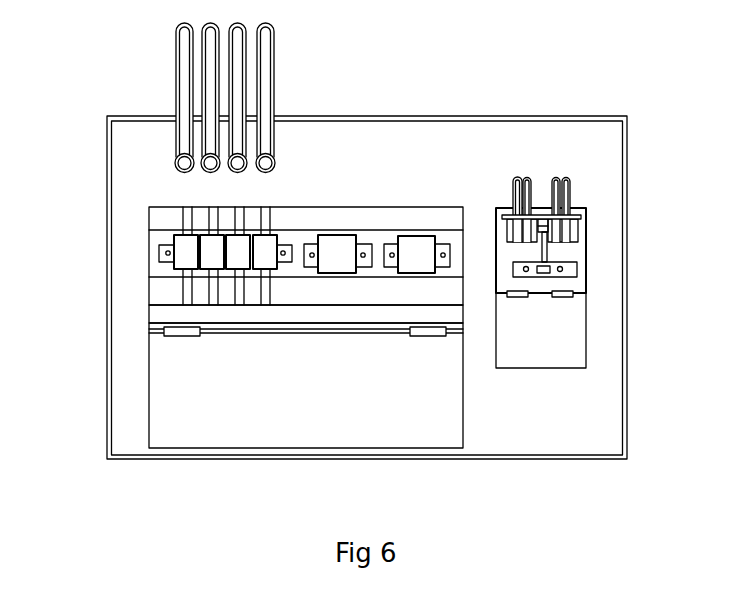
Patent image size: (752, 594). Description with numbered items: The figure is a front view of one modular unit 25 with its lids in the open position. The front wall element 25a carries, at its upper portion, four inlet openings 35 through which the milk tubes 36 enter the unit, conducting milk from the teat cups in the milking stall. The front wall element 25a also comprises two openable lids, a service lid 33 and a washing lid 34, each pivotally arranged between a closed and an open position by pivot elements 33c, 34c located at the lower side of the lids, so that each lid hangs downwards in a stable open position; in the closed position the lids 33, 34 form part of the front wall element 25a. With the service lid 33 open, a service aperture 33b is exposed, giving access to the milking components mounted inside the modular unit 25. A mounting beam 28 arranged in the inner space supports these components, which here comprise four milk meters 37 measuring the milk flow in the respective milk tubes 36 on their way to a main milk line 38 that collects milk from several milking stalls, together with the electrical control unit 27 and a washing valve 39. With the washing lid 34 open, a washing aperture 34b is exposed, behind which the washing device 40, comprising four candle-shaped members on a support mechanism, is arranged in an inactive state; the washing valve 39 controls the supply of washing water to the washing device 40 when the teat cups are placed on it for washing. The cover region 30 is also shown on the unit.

The modular unit 25 is at (517, 76).
The front wall element 25a is at (130, 375).
The electrical control unit 27 is at (335, 250).
The mounting beam 28 is at (157, 237).
The cover plate 30 is at (370, 132).
The service lid 33 is at (203, 412).
The service aperture 33b is at (172, 217).
The pivot elements 33c is at (183, 332).
The washing lid 34 is at (547, 352).
The washing aperture 34b is at (575, 250).
The pivot elements 34c is at (570, 295).
The inlet openings 35 is at (197, 160).
The milk tubes 36 is at (208, 50).
The milk meters 37 is at (210, 258).
The main milk line 38 is at (322, 313).
The washing valve 39 is at (417, 248).
The washing device 40 is at (563, 227).